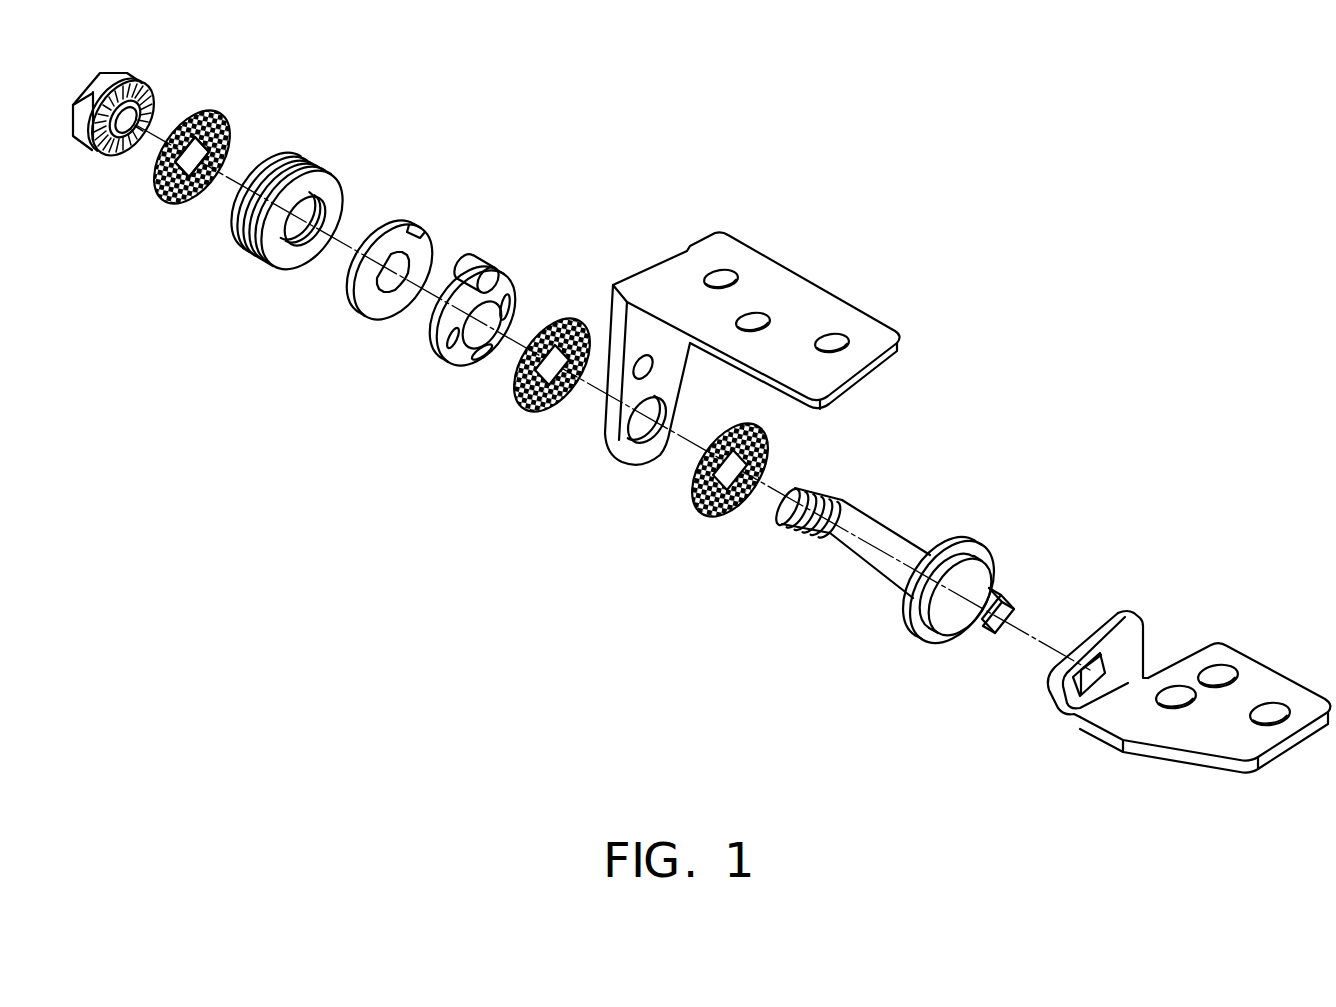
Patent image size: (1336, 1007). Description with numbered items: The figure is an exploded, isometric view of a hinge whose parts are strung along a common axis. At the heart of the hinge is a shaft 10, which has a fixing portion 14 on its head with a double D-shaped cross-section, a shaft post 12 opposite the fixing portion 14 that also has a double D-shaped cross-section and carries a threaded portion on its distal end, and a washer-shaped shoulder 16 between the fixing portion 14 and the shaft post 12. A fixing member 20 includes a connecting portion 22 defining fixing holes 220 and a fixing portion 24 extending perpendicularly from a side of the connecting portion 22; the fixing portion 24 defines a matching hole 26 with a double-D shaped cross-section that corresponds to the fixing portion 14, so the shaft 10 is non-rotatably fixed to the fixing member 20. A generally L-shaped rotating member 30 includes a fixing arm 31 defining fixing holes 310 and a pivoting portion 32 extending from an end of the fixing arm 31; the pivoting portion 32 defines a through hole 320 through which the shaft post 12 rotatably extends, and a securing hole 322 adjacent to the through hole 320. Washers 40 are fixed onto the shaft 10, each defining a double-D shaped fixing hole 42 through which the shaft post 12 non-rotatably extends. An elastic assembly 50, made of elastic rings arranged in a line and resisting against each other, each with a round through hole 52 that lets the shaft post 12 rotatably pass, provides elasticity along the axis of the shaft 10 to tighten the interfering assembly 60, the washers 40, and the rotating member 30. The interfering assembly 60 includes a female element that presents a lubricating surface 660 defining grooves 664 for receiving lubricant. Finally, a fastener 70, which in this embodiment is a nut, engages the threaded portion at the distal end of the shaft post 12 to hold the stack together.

The shaft 10 is at (920, 560).
The shaft post 12 is at (875, 538).
The fixing portion 14 is at (996, 606).
The washer-shaped shoulder 16 is at (950, 556).
The fixing member 20 is at (1189, 690).
The connecting portion 22 is at (1205, 722).
The fixing holes 220 is at (1220, 670).
The fixing portion 24 is at (1098, 677).
The matching hole 26 is at (1086, 685).
The rotating member 30 is at (759, 361).
The fixing arm 31 is at (778, 291).
The fixing holes 310 is at (725, 275).
The pivoting portion 32 is at (712, 417).
The through hole 320 is at (648, 447).
The securing hole 322 is at (653, 372).
The washers 40 is at (207, 112).
The fixing hole 42 is at (187, 172).
The elastic assembly 50 is at (293, 228).
The round through hole 52 is at (303, 242).
The interfering assembly 60 is at (442, 335).
The lubricating surface 660 is at (484, 345).
The grooves 664 is at (509, 306).
The fastener 70 is at (83, 124).